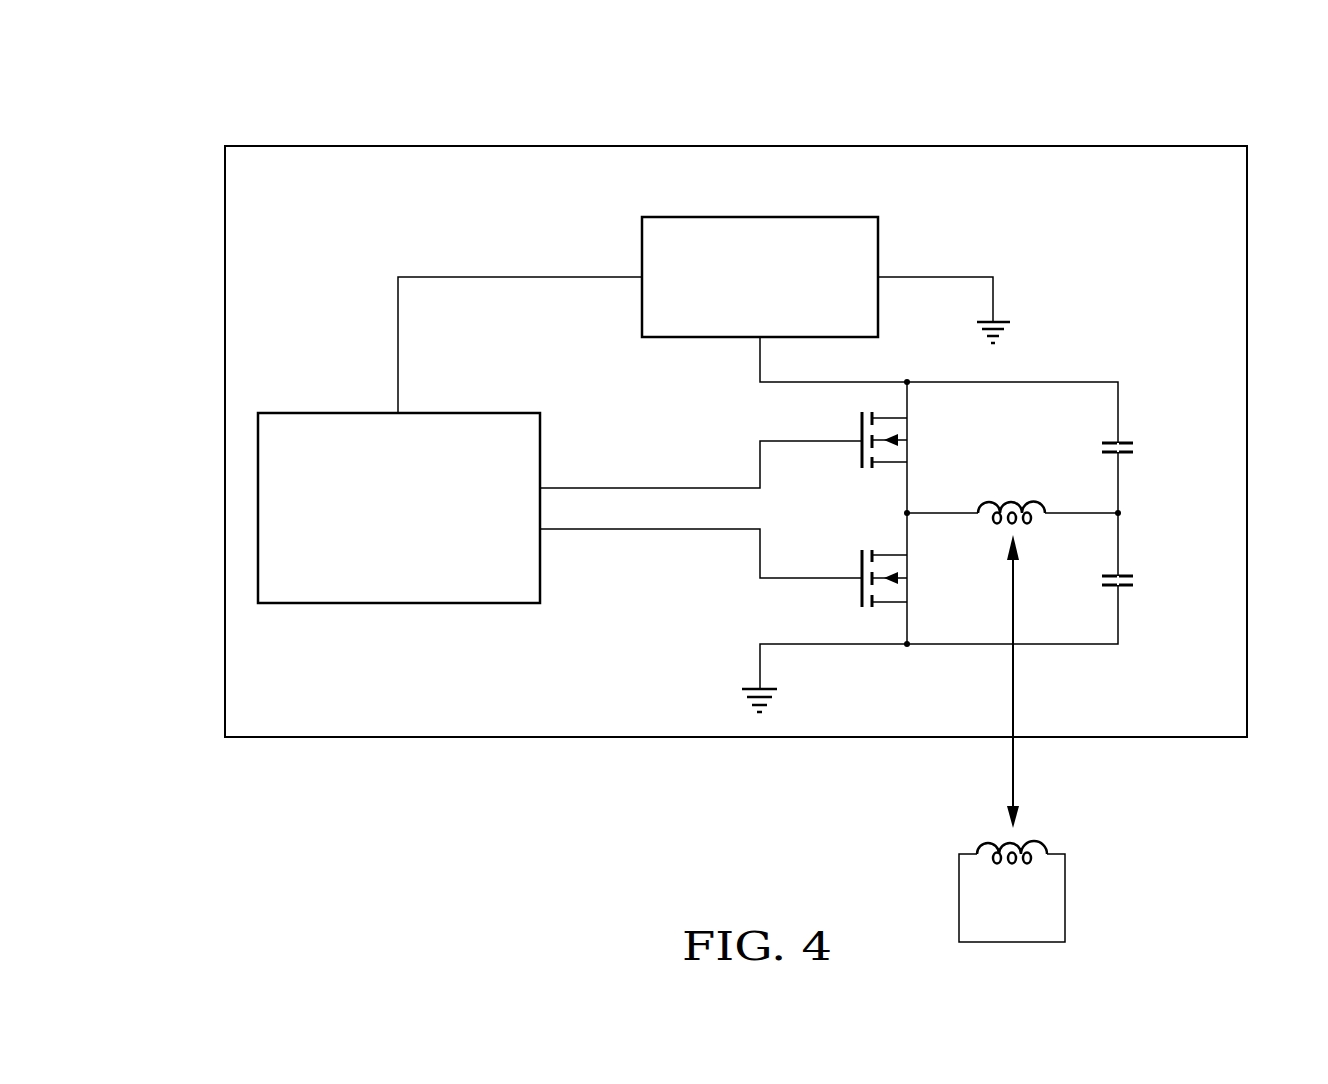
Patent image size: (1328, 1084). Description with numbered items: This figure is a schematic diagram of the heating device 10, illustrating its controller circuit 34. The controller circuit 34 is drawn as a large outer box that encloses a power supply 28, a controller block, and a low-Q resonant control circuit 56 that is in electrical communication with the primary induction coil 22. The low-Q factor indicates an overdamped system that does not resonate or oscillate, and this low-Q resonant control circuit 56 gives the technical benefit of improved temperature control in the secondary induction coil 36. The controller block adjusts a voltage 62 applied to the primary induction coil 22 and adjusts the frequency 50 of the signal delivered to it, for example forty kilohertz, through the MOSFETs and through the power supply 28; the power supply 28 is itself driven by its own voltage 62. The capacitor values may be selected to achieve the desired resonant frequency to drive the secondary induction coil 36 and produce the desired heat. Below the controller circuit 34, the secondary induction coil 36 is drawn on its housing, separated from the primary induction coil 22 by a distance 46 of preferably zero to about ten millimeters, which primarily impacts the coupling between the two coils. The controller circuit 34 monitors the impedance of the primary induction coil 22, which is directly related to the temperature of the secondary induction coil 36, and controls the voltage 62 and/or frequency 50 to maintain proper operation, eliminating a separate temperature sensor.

The heating device 10 is at (193, 87).
The controller circuit 34 is at (223, 322).
The power supply 28 is at (878, 235).
The voltage 62 is at (725, 265).
The frequency 50 is at (318, 528).
The low-Q resonant control circuit 56 is at (1150, 410).
The primary induction coil 22 is at (1012, 500).
The distance 46 is at (1015, 763).
The secondary induction coil 36 is at (983, 847).